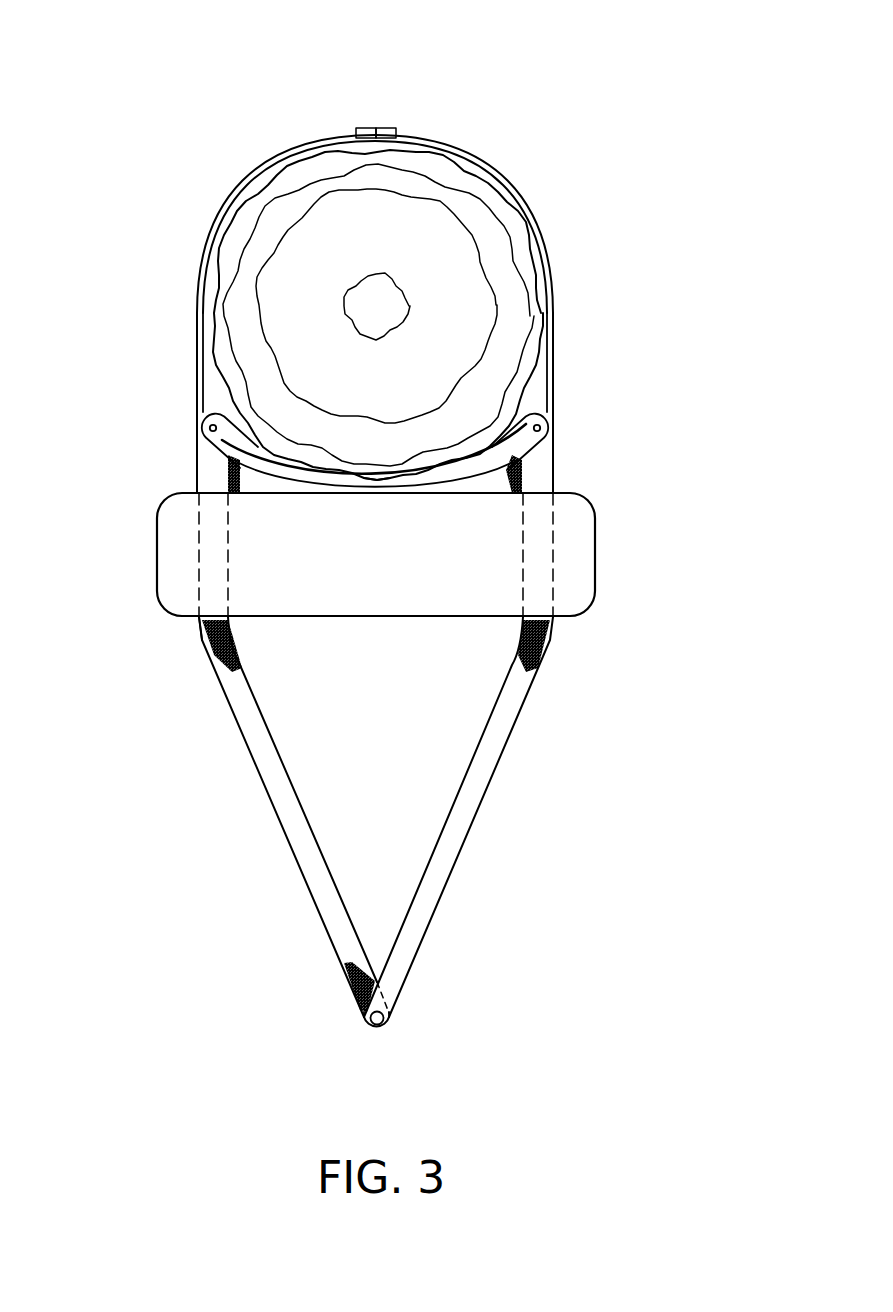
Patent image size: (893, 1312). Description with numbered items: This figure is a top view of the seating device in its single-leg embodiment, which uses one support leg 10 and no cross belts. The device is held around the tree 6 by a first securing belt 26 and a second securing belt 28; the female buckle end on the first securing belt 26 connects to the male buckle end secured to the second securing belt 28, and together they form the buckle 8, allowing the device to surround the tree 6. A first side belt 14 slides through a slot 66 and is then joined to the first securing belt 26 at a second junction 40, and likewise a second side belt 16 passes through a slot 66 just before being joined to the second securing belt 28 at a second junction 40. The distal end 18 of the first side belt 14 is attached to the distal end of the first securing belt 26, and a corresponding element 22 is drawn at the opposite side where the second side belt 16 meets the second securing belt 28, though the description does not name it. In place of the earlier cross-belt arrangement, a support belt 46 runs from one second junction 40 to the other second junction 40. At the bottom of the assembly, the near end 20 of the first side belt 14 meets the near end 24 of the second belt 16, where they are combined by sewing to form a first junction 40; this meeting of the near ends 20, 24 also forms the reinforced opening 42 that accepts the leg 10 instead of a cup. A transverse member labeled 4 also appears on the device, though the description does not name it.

The base bar 4 is at (597, 587).
The tree 6 is at (445, 188).
The buckle 8 is at (386, 104).
The support leg 10 is at (424, 1006).
The first side belt 14 is at (265, 794).
The second side belt 16 is at (500, 753).
The distal end of the first side belt 18 is at (204, 445).
The near end of the first side belt 20 is at (362, 1011).
The band 22 is at (543, 410).
The near end of the second belt 24 is at (388, 1025).
The first securing belt 26 is at (196, 278).
The second securing belt 28 is at (552, 252).
The junction 40 is at (209, 430).
The reinforced opening 42 is at (375, 1026).
The support belt 46 is at (473, 487).
The slot 66 is at (542, 548).